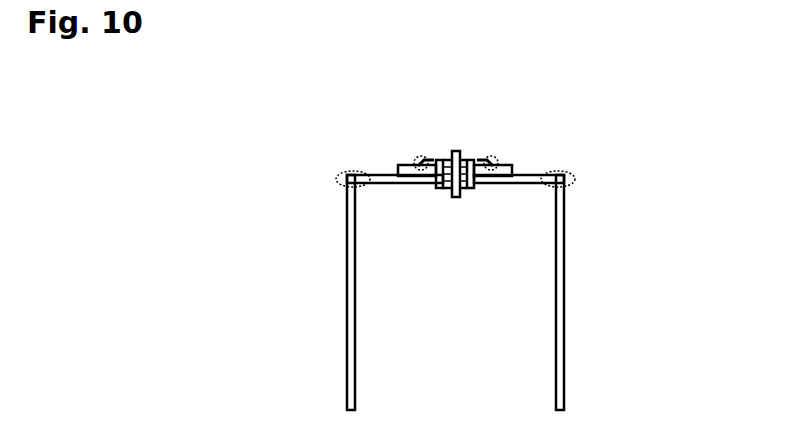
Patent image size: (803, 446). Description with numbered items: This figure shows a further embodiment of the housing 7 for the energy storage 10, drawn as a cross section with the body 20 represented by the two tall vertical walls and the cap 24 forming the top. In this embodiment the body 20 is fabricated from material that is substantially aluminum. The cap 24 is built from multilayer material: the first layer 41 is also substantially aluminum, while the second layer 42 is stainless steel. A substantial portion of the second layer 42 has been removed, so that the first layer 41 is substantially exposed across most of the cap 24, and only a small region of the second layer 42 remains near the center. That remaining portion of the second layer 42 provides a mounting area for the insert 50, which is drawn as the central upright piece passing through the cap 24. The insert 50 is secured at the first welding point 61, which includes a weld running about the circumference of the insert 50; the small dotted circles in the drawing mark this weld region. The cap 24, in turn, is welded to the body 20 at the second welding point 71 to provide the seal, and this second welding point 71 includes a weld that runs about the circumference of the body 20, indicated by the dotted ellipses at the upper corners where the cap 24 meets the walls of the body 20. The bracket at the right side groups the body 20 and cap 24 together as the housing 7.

The energy storage 10 is at (308, 260).
The housing 7 is at (662, 165).
The body 20 is at (553, 300).
The cap 24 is at (523, 178).
The first layer 41 is at (395, 178).
The second layer 42 is at (478, 180).
The insert 50 is at (457, 152).
The first welding point 61 is at (418, 160).
The second welding point 71 is at (352, 170).